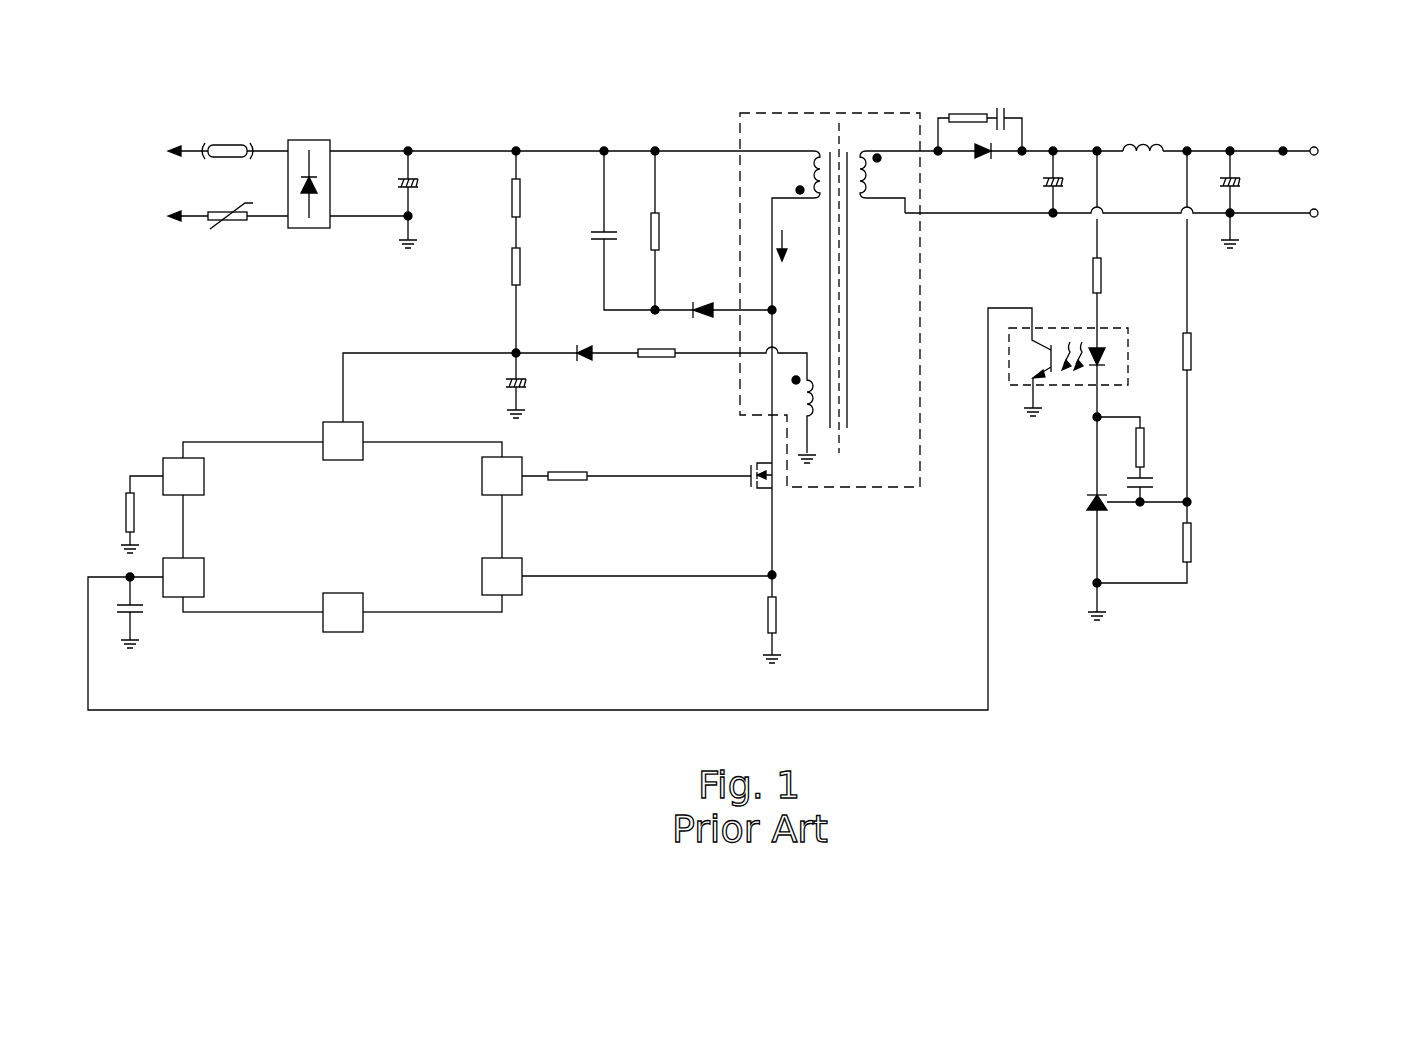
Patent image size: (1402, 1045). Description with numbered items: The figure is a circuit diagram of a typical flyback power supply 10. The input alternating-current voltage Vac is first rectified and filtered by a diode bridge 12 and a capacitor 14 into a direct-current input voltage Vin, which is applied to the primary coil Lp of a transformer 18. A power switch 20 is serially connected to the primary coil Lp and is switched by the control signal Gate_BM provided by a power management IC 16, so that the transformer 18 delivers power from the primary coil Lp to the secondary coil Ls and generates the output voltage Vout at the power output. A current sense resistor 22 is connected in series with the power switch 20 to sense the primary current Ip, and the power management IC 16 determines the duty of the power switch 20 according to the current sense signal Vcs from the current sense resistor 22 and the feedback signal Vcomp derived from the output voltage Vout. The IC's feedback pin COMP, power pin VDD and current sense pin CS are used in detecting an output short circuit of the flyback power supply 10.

The flyback power supply 10 is at (1306, 93).
The diode bridge 12 is at (310, 140).
The capacitor 14 is at (428, 187).
The power management IC 16 is at (251, 440).
The transformer 18 is at (884, 488).
The power switch 20 is at (754, 494).
The current sense resistor 22 is at (766, 613).